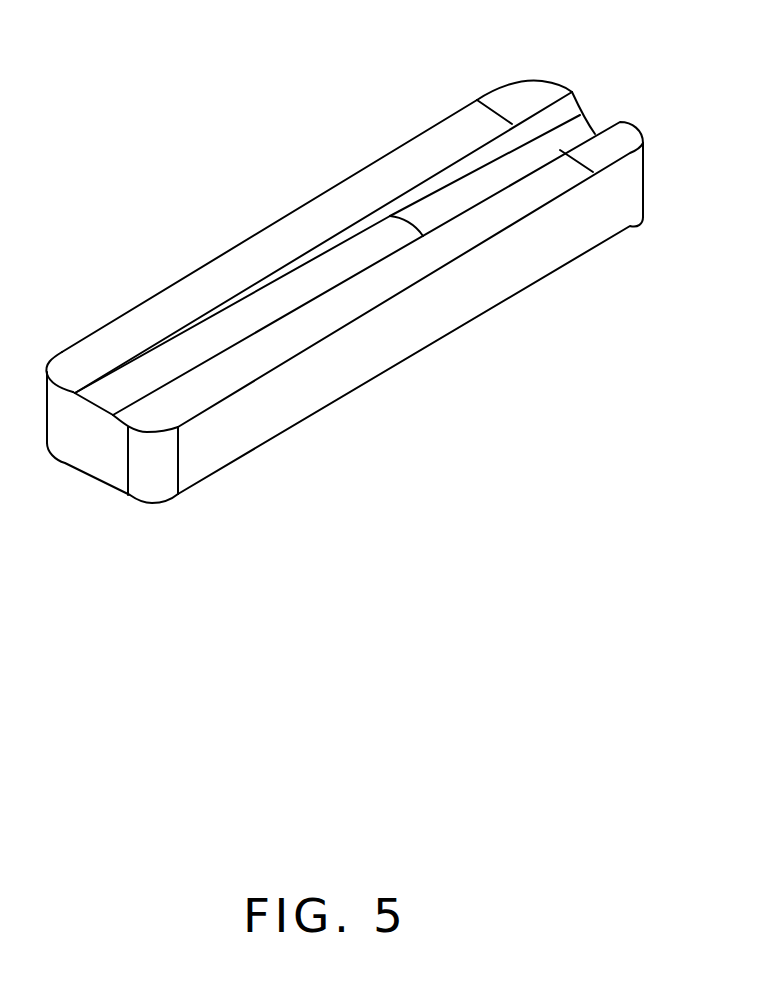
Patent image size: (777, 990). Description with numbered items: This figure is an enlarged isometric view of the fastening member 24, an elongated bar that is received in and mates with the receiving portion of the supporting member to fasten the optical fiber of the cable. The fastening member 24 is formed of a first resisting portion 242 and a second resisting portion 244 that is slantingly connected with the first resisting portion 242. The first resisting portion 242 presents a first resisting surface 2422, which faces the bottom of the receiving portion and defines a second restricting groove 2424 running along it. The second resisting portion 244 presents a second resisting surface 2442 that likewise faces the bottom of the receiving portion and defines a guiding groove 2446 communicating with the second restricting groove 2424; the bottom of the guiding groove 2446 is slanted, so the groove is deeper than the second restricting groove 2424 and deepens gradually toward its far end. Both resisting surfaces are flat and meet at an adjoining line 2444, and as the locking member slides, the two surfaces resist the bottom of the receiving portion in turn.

The fastening member 24 is at (380, 283).
The first resisting portion 242 is at (334, 325).
The first resisting surface 2422 is at (417, 157).
The second restricting groove 2424 is at (122, 386).
The second resisting portion 244 is at (558, 142).
The second resisting surface 2442 is at (515, 97).
The adjoining line 2444 is at (458, 112).
The guiding groove 2446 is at (570, 134).